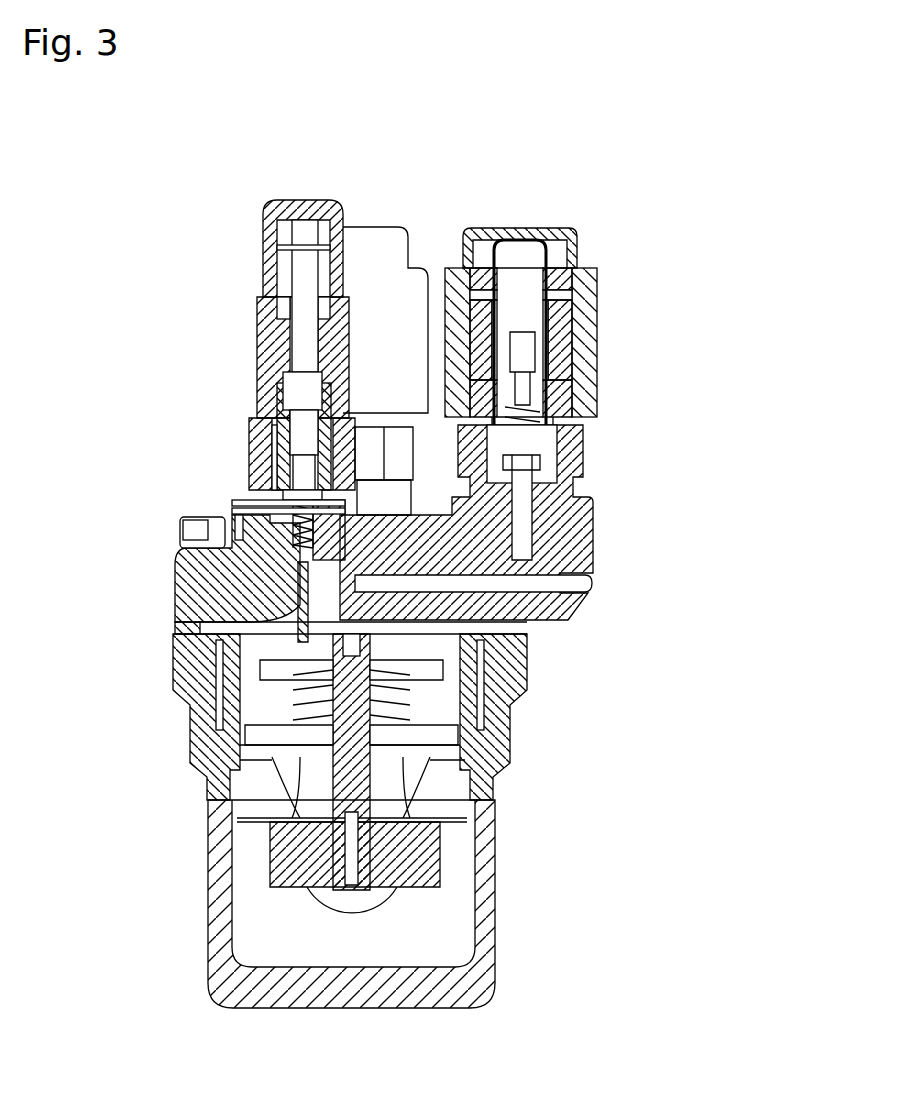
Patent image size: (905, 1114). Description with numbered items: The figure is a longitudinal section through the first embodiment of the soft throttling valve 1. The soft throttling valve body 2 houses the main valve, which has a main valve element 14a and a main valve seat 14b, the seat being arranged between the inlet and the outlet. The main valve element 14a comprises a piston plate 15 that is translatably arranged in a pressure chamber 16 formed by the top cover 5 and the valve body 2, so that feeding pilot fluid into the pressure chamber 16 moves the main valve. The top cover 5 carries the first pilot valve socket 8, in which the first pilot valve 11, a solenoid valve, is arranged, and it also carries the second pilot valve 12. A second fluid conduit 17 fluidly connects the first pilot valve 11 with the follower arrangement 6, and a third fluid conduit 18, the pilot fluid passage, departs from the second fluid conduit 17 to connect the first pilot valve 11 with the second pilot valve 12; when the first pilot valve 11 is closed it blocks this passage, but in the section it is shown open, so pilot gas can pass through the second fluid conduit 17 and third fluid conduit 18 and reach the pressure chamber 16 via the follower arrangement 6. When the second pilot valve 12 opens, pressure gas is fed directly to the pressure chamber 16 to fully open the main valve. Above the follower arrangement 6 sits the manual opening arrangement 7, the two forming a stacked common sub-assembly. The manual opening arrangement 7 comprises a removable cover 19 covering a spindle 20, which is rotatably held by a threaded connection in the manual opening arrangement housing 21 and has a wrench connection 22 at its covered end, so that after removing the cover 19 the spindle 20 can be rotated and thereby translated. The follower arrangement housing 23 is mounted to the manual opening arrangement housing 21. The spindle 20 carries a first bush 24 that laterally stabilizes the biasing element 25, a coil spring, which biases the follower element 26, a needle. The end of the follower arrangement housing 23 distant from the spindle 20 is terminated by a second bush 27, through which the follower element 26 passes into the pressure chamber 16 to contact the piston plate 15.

The soft throttling valve 1 is at (273, 133).
The soft throttling valve body 2 is at (223, 913).
The top cover 5 is at (566, 568).
The follower arrangement 6 is at (242, 432).
The manual opening arrangement 7 is at (240, 258).
The first pilot valve socket 8 is at (578, 507).
The first pilot valve 11 is at (593, 267).
The second pilot valve 12 is at (390, 252).
The main valve element 14a is at (403, 893).
The main valve seat 14b is at (430, 847).
The piston plate 15 is at (265, 650).
The pressure chamber 16 is at (270, 620).
The second fluid conduit 17 is at (513, 685).
The third fluid conduit 18 is at (547, 622).
The removable cover 19 is at (263, 217).
The spindle 20 is at (300, 318).
The manual opening arrangement housing 21 is at (275, 378).
The wrench connection 22 is at (312, 227).
The follower arrangement housing 23 is at (262, 490).
The first bush 24 is at (290, 503).
The biasing element 25 is at (300, 512).
The follower element 26 is at (277, 567).
The second bush 27 is at (270, 598).